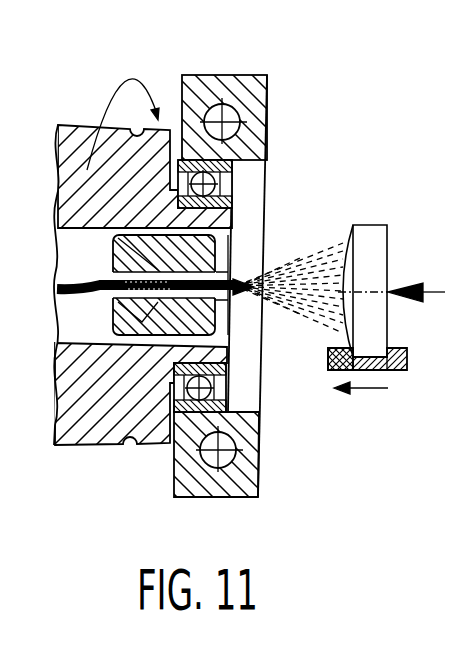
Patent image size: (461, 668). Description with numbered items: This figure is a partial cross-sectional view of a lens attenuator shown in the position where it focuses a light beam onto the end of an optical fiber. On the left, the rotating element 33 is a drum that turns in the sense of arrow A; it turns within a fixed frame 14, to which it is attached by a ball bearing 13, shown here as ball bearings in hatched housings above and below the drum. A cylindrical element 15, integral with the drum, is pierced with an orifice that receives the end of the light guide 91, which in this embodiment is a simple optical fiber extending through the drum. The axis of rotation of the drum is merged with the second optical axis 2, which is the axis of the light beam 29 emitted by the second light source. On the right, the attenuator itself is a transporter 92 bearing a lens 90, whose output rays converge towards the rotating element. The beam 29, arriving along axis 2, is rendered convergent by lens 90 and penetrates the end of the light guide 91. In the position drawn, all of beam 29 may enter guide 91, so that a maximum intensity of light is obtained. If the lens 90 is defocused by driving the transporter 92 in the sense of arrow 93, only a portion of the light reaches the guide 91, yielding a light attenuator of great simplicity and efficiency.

The rotating element 33 is at (78, 112).
The arrow A is at (121, 82).
The fixed frame 14 is at (266, 80).
The ball bearing 13 is at (232, 187).
The cylindrical element 15 is at (233, 232).
The light guide 91 is at (70, 292).
The light beam 29 is at (324, 333).
The second optical axis 2 is at (445, 292).
The lens 90 is at (367, 372).
The transporter 92 is at (397, 371).
The arrow 93 is at (340, 394).